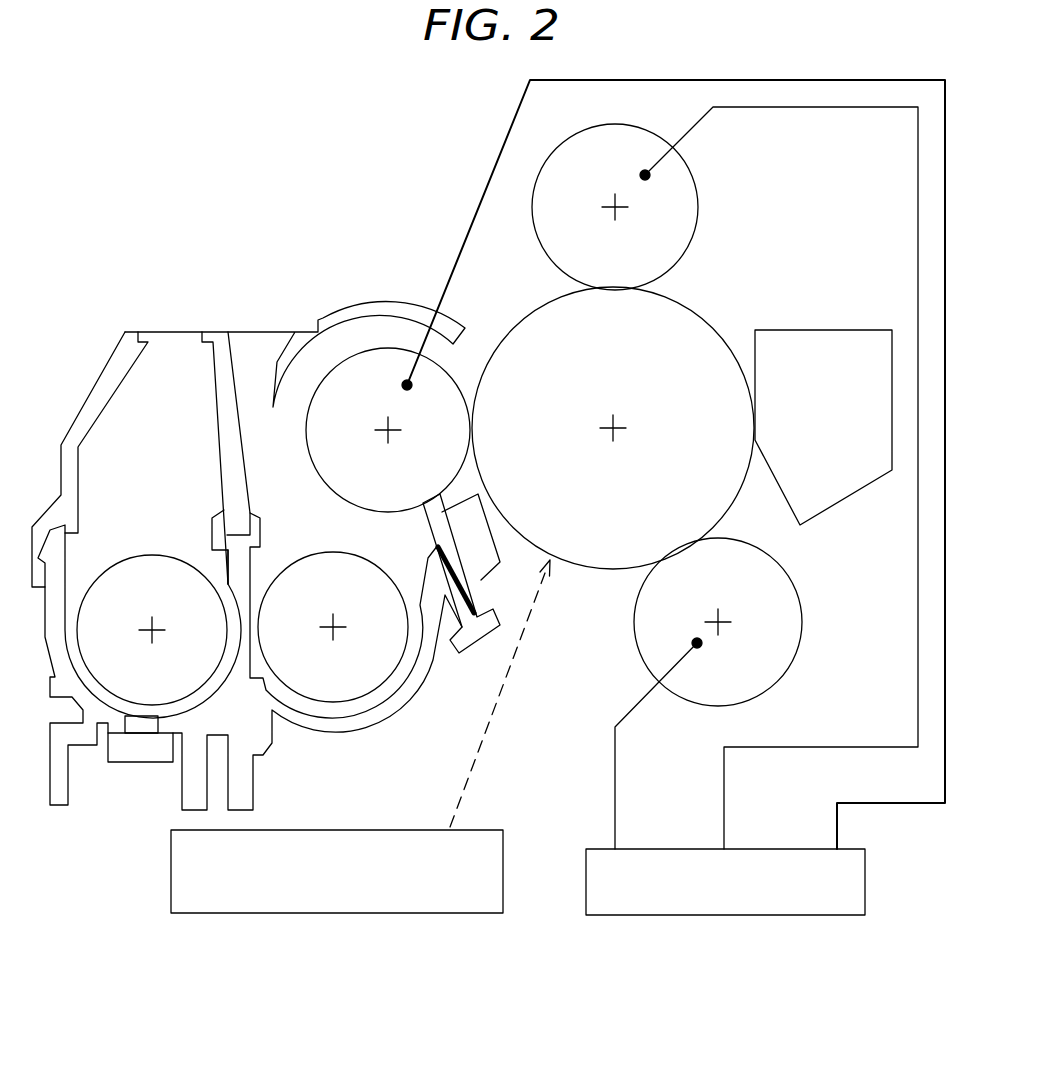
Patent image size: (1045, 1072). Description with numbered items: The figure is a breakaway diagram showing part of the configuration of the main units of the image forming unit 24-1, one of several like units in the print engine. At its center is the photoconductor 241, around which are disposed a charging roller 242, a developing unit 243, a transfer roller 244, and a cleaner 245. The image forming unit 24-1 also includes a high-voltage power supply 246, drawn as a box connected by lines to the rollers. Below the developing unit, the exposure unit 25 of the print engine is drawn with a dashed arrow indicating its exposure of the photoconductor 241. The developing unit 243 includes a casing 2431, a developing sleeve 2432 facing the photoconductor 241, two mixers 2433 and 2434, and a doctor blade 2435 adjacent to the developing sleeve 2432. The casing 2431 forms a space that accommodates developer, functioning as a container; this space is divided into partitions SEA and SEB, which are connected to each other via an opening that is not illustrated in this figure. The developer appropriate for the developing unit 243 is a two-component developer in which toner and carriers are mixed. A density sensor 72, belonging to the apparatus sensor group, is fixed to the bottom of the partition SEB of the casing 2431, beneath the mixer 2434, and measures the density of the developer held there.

The image forming unit 24-1 is at (328, 182).
The developing unit 243 is at (188, 263).
The casing 2431 is at (383, 719).
The developing sleeve 2432 is at (368, 348).
The mixer 2433 is at (305, 553).
The mixer 2434 is at (160, 557).
The doctor blade 2435 is at (428, 533).
The partition SEB is at (175, 361).
The partition SEA is at (255, 361).
The photoconductor 241 is at (700, 320).
The charging roller 242 is at (785, 670).
The transfer roller 244 is at (696, 185).
The cleaner 245 is at (840, 330).
The high-voltage power supply 246 is at (755, 849).
The exposure unit 25 is at (171, 878).
The density sensor 72 is at (132, 763).